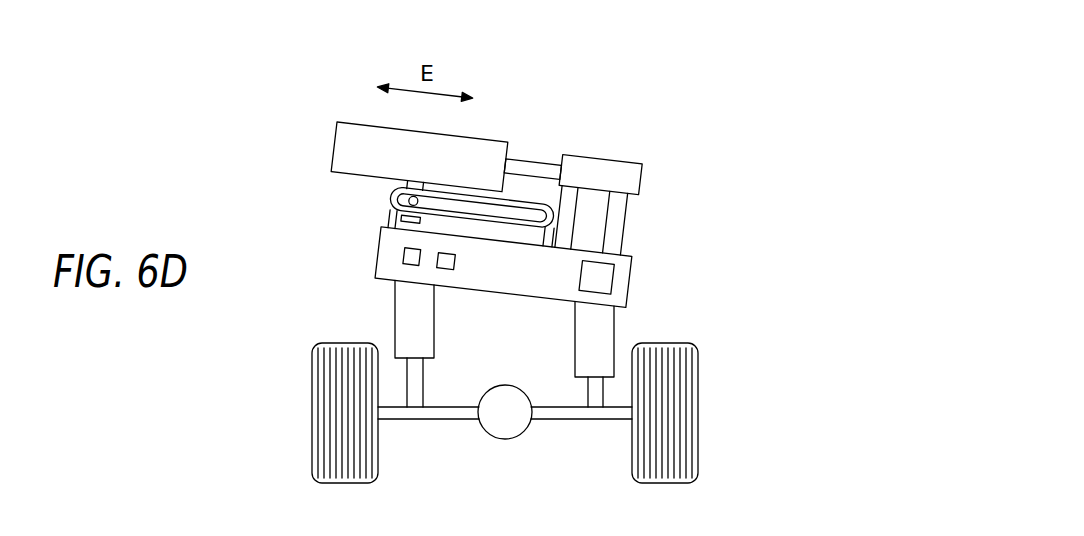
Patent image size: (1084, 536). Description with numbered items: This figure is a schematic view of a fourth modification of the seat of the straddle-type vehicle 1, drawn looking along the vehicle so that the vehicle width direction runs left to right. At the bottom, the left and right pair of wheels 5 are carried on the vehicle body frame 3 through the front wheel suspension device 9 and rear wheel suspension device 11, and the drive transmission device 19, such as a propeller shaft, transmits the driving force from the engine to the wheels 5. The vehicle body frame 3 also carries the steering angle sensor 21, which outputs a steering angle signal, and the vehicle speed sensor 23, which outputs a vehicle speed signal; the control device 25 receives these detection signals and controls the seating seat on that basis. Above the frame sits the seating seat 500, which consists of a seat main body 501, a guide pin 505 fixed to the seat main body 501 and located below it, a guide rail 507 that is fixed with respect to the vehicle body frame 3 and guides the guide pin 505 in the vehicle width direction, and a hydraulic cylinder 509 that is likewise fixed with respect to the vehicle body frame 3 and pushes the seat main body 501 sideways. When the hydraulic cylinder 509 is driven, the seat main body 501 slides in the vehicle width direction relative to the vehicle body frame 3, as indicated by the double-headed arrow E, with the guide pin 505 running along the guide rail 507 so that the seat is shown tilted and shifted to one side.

The straddle-type vehicle 1 is at (330, 101).
The seating seat 500 is at (575, 98).
The seat main body 501 is at (493, 137).
The hydraulic cylinder 509 is at (602, 157).
The guide pin 505 is at (555, 209).
The guide rail 507 is at (548, 217).
The vehicle body frame 3 is at (633, 262).
The steering angle sensor 21 is at (405, 257).
The vehicle speed sensor 23 is at (447, 270).
The control device 25 is at (612, 278).
The front wheel suspension device 9 is at (395, 315).
The rear wheel suspension device 11 is at (615, 320).
The front wheels 5 is at (312, 414).
The drive transmission device 19 is at (508, 440).